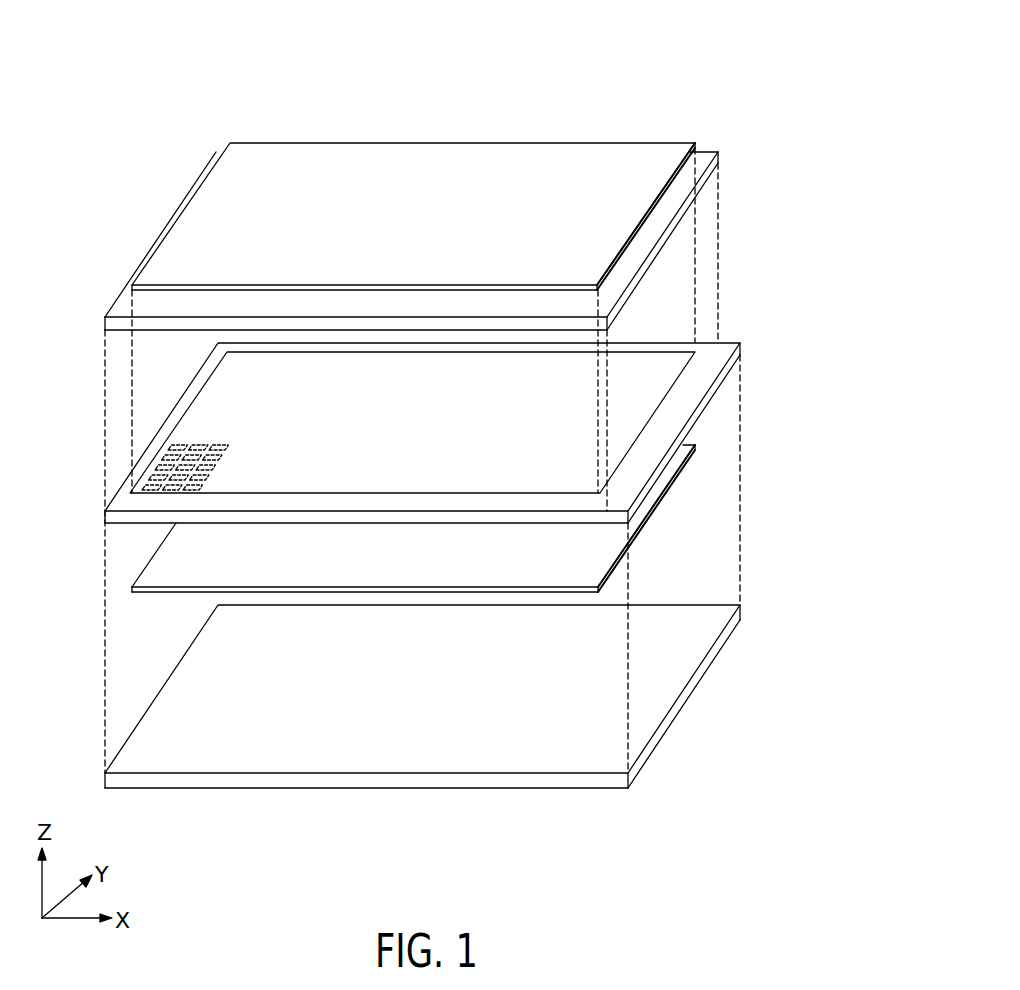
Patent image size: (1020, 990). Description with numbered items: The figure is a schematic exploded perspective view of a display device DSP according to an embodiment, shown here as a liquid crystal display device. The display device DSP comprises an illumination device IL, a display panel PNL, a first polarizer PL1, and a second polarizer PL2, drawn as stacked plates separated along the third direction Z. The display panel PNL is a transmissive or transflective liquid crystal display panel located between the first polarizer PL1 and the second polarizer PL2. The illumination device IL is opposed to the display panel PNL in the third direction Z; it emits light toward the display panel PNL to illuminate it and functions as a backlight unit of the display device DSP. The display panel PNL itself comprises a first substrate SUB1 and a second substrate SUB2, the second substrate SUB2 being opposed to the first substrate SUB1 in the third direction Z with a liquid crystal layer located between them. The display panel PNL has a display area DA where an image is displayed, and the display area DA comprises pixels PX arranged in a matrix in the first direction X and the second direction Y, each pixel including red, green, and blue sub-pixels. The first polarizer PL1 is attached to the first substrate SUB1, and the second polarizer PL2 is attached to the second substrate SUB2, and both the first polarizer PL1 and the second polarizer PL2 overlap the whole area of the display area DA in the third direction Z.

The display device DSP is at (812, 67).
The display panel PNL is at (775, 131).
The second polarizer PL2 is at (660, 153).
The second substrate SUB2 is at (715, 168).
The first substrate SUB1 is at (742, 350).
The display area DA is at (222, 382).
The pixels PX is at (178, 445).
The first polarizer PL1 is at (667, 479).
The illumination device IL is at (758, 607).